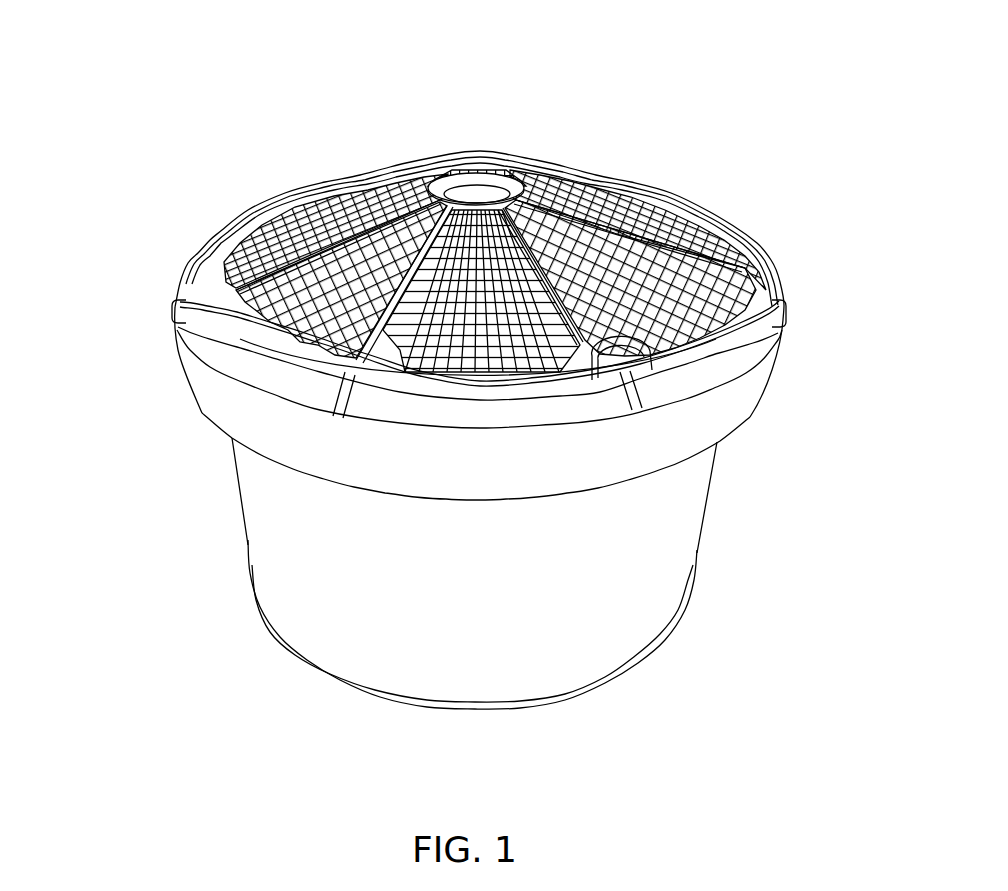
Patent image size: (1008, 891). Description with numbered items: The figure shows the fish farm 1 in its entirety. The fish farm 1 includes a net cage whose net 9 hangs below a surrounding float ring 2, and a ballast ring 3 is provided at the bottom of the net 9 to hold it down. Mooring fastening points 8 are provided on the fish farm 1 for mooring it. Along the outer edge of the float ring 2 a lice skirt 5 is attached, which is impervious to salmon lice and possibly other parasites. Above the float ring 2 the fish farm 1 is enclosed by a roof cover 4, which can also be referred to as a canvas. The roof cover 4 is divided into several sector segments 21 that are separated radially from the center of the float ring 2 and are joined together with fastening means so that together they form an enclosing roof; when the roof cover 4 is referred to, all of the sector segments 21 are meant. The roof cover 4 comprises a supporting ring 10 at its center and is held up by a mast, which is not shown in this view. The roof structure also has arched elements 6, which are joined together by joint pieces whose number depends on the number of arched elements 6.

The fish farm 1 is at (187, 296).
The float ring 2 is at (215, 345).
The ballast ring 3 is at (667, 628).
The roof cover 4 is at (266, 212).
The lice skirt 5 is at (735, 398).
The arched elements 6 is at (774, 275).
The mooring fastening points 8 is at (783, 333).
The net 9 is at (667, 506).
The supporting ring 10 is at (532, 163).
The sector segments 21 is at (385, 176).